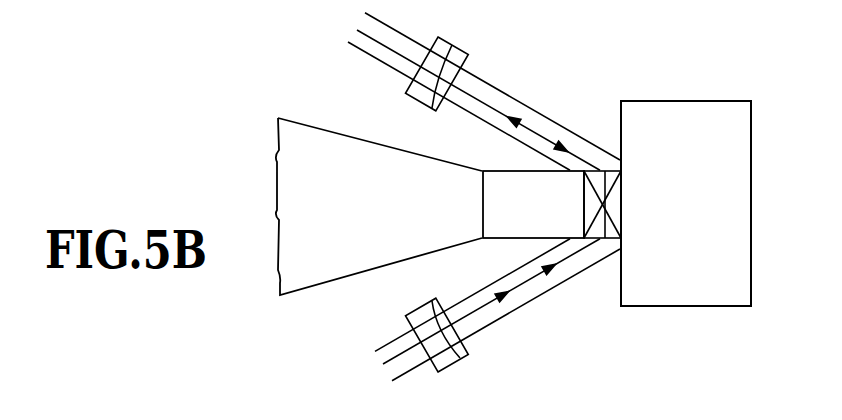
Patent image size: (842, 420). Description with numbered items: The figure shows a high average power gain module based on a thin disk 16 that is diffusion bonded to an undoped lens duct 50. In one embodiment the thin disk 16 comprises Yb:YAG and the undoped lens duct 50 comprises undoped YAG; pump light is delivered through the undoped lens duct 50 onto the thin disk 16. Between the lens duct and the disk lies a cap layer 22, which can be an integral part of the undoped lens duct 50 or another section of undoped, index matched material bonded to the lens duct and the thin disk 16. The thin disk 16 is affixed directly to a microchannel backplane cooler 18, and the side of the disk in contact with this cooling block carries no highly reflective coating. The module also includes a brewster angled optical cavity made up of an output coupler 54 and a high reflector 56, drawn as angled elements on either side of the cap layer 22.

The thin disk 16 is at (612, 213).
The microchannel backplane cooler 18 is at (728, 187).
The cap layer 22 is at (550, 217).
The undoped lens duct 50 is at (368, 199).
The output coupler 54 is at (468, 63).
The high reflector 56 is at (461, 357).